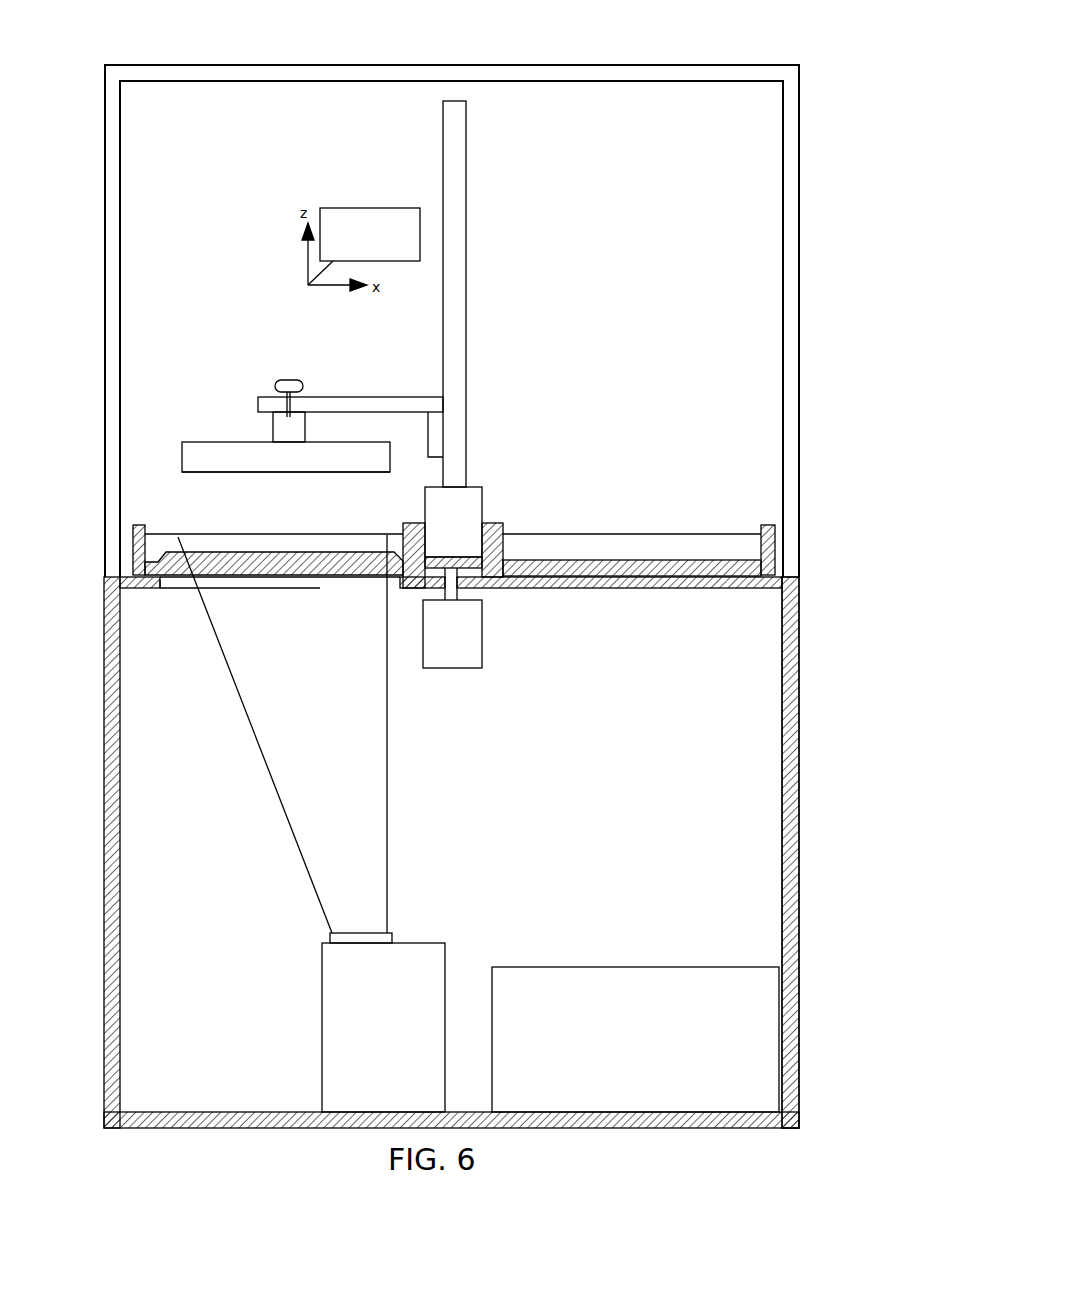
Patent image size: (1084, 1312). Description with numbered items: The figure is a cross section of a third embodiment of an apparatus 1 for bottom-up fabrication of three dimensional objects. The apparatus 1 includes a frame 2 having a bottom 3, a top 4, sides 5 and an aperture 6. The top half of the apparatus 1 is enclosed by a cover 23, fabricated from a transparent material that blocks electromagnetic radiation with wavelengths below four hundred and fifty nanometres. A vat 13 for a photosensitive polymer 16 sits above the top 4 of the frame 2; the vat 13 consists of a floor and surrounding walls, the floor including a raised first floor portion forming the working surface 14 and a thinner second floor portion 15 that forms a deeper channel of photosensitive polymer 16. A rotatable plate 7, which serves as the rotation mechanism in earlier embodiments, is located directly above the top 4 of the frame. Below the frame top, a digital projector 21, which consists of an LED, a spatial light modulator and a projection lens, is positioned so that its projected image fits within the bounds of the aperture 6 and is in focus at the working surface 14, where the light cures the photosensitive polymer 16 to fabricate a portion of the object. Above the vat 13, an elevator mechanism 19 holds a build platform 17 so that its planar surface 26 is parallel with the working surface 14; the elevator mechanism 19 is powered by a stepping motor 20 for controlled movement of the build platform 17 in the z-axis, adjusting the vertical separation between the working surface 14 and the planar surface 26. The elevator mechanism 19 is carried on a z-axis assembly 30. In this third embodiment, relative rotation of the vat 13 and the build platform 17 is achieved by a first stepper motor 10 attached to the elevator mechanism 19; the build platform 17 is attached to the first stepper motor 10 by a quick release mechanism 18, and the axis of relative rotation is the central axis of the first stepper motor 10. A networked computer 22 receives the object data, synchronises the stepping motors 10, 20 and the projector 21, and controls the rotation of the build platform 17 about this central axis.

The apparatus 1 is at (627, 57).
The frame 2 is at (802, 686).
The bottom 3 is at (190, 1122).
The top 4 is at (553, 592).
The sides 5 is at (104, 823).
The aperture 6 is at (365, 588).
The rotatable plate 7 is at (487, 570).
The first stepper motor 10 is at (426, 630).
The vat 13 is at (138, 525).
The working surface 14 is at (383, 553).
The second floor portion 15 is at (738, 560).
The photosensitive polymer 16 is at (196, 534).
The build platform 17 is at (193, 442).
The quick release mechanism 18 is at (287, 377).
The elevator mechanism 19 is at (347, 397).
The stepping motor 20 is at (483, 518).
The digital projector 21 is at (292, 982).
The networked computer 22 is at (598, 965).
The cover 23 is at (105, 135).
The planar surface 26 is at (288, 470).
The z-axis assembly 30 is at (466, 293).